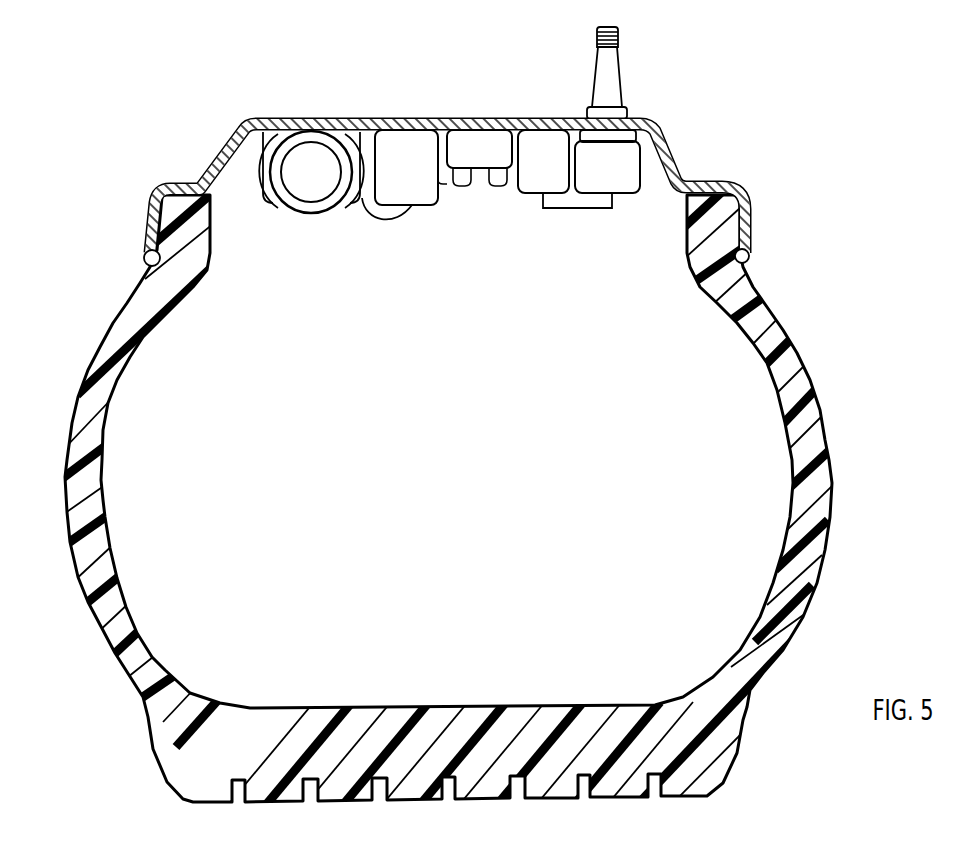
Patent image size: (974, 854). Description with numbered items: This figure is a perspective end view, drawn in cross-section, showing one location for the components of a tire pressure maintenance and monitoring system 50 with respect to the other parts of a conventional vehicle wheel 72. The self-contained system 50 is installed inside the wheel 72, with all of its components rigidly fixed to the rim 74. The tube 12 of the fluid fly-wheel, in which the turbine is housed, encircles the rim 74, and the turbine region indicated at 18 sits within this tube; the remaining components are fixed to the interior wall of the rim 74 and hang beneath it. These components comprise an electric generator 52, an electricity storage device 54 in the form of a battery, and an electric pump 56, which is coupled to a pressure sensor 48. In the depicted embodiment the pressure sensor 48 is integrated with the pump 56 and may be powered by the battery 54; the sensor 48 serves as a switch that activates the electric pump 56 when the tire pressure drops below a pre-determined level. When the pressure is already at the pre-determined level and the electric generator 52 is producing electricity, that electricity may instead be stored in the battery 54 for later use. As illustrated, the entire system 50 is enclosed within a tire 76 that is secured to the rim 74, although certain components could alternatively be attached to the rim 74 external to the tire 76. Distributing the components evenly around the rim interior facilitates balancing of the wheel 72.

The tube 12 is at (313, 128).
The turbine housing 18 is at (312, 216).
The pressure sensor 48 is at (623, 192).
The tire pressure maintenance and monitoring system 50 is at (452, 204).
The electric generator 52 is at (422, 195).
The electricity storage device 54 is at (477, 165).
The electric pump 56 is at (528, 195).
The vehicle wheel 72 is at (212, 114).
The rim 74 is at (712, 181).
The tire 76 is at (824, 443).